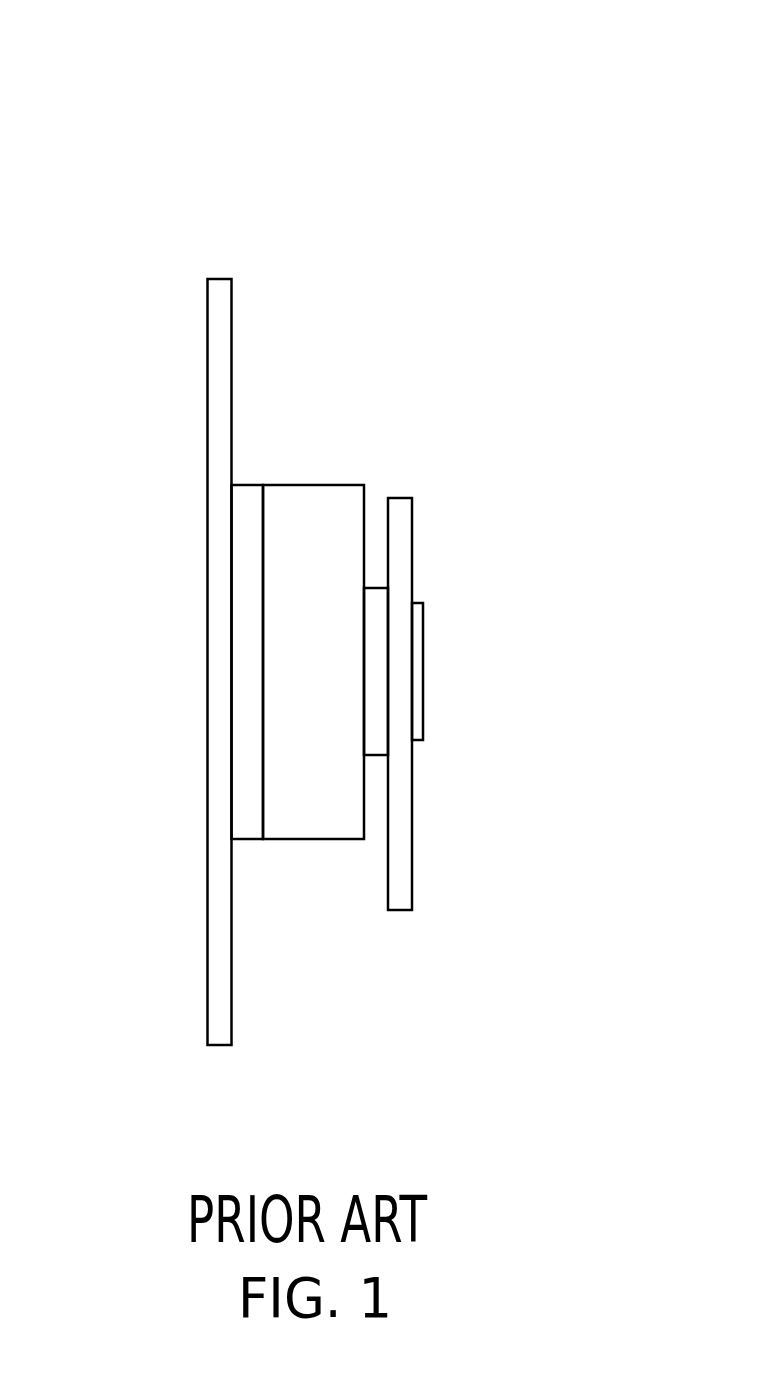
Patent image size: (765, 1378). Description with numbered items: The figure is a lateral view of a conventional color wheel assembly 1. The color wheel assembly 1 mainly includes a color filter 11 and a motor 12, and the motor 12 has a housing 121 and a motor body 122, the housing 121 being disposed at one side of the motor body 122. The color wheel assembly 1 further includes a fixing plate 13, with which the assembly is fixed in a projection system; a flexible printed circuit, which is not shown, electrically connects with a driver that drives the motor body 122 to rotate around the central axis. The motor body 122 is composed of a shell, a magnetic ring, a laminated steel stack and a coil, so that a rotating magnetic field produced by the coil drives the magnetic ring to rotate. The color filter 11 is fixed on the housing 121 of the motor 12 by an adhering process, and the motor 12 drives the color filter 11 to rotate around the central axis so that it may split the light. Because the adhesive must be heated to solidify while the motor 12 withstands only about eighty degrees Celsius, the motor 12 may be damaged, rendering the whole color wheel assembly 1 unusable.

The color wheel assembly 1 is at (104, 20).
The color filter 11 is at (218, 435).
The motor 12 is at (446, 584).
The housing 121 is at (252, 495).
The motor body 122 is at (332, 497).
The fixing plate 13 is at (401, 903).